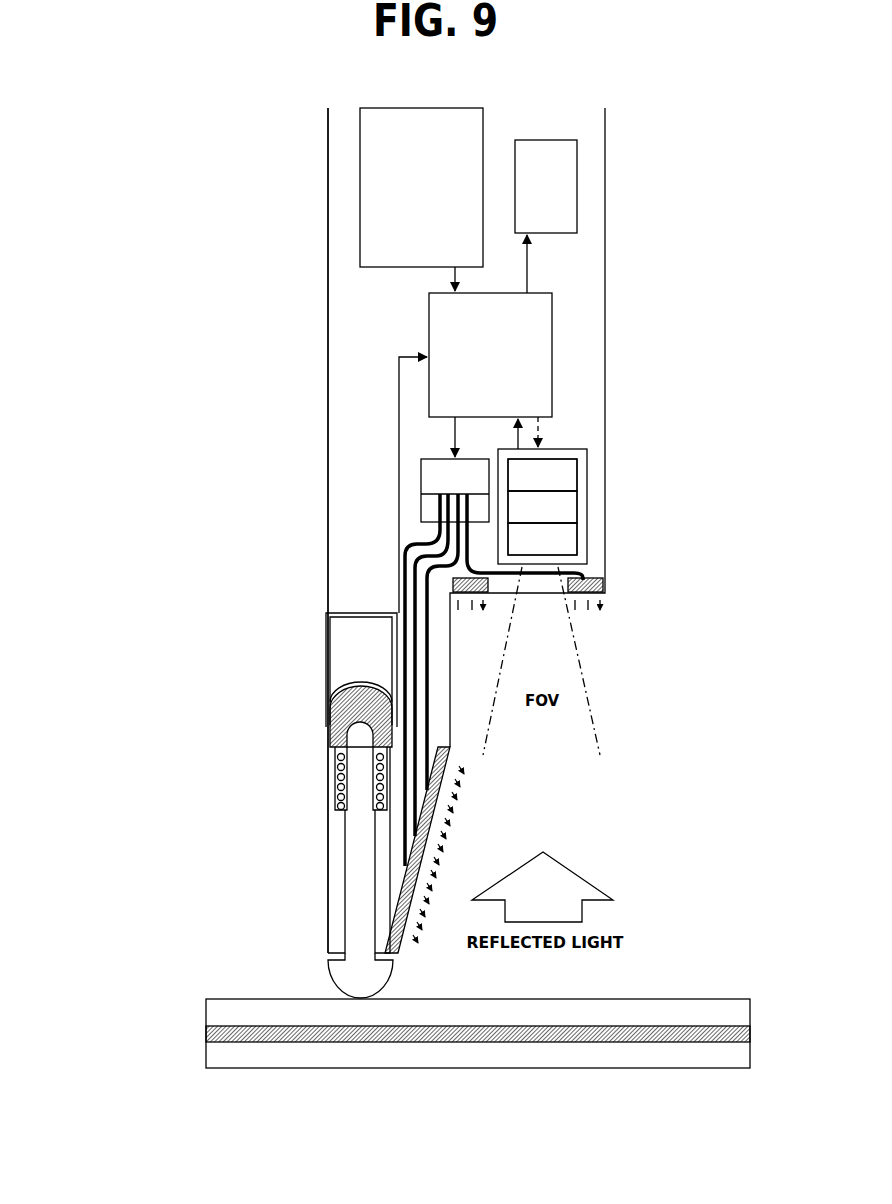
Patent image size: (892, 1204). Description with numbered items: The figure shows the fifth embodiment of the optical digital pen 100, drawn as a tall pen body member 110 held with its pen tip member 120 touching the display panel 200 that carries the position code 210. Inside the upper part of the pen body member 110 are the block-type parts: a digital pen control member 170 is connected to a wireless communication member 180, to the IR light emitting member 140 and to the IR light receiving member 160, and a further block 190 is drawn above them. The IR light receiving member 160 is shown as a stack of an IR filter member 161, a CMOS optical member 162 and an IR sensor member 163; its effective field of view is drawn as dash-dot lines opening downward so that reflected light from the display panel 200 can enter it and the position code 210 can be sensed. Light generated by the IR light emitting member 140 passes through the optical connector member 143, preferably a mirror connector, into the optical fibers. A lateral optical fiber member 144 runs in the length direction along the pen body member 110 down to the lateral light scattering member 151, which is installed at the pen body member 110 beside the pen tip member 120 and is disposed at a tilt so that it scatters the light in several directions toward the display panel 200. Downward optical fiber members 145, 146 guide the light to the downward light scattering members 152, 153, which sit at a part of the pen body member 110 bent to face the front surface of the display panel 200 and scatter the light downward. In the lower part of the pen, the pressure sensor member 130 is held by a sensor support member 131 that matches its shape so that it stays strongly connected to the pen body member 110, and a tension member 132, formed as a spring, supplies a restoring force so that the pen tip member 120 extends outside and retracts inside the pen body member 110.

The optical digital pen 100 is at (316, 176).
The pen body member 110 is at (328, 322).
The pen tip member 120 is at (338, 975).
The pressure sensor member 130 is at (333, 717).
The sensor support member 131 is at (361, 670).
The tension member 132 is at (336, 783).
The IR light emitting member 140 is at (455, 490).
The optical connector member 143 is at (425, 502).
The lateral optical fiber member 144 is at (443, 537).
The downward optical fiber member 145 is at (452, 568).
The downward optical fiber member 146 is at (584, 577).
The lateral light scattering member 151 is at (397, 908).
The downward light scattering member 152 is at (455, 585).
The downward light scattering member 153 is at (603, 584).
The IR light receiving member 160 is at (587, 481).
The IR filter member 161 is at (542, 475).
The CMOS optical member 162 is at (542, 507).
The IR sensor member 163 is at (542, 539).
The digital pen control member 170 is at (490, 355).
The wireless communication member 180 is at (546, 186).
The power supply 190 is at (421, 187).
The display panel 200 is at (204, 993).
The position code 210 is at (206, 1038).